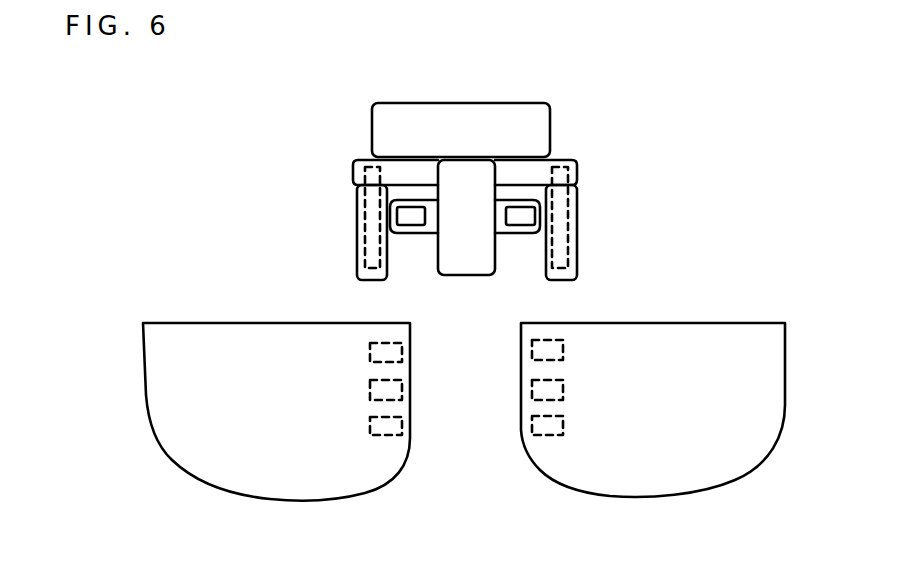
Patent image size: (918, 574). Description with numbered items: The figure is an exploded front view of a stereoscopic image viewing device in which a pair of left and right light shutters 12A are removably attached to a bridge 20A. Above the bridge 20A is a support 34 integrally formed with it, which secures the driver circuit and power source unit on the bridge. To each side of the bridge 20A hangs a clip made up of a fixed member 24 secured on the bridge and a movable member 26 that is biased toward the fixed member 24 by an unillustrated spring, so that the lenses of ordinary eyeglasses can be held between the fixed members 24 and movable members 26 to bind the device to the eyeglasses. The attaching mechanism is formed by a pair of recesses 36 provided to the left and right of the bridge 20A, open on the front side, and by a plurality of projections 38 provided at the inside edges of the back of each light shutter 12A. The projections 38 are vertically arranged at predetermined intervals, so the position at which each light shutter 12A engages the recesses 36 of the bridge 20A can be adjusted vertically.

The support 34 is at (502, 103).
The bridge 20A is at (468, 263).
The fixed member 24 is at (358, 240).
The movable member 26 is at (360, 210).
The recess 36 is at (413, 222).
The light shutter 12A is at (237, 480).
The projection 38 is at (403, 427).